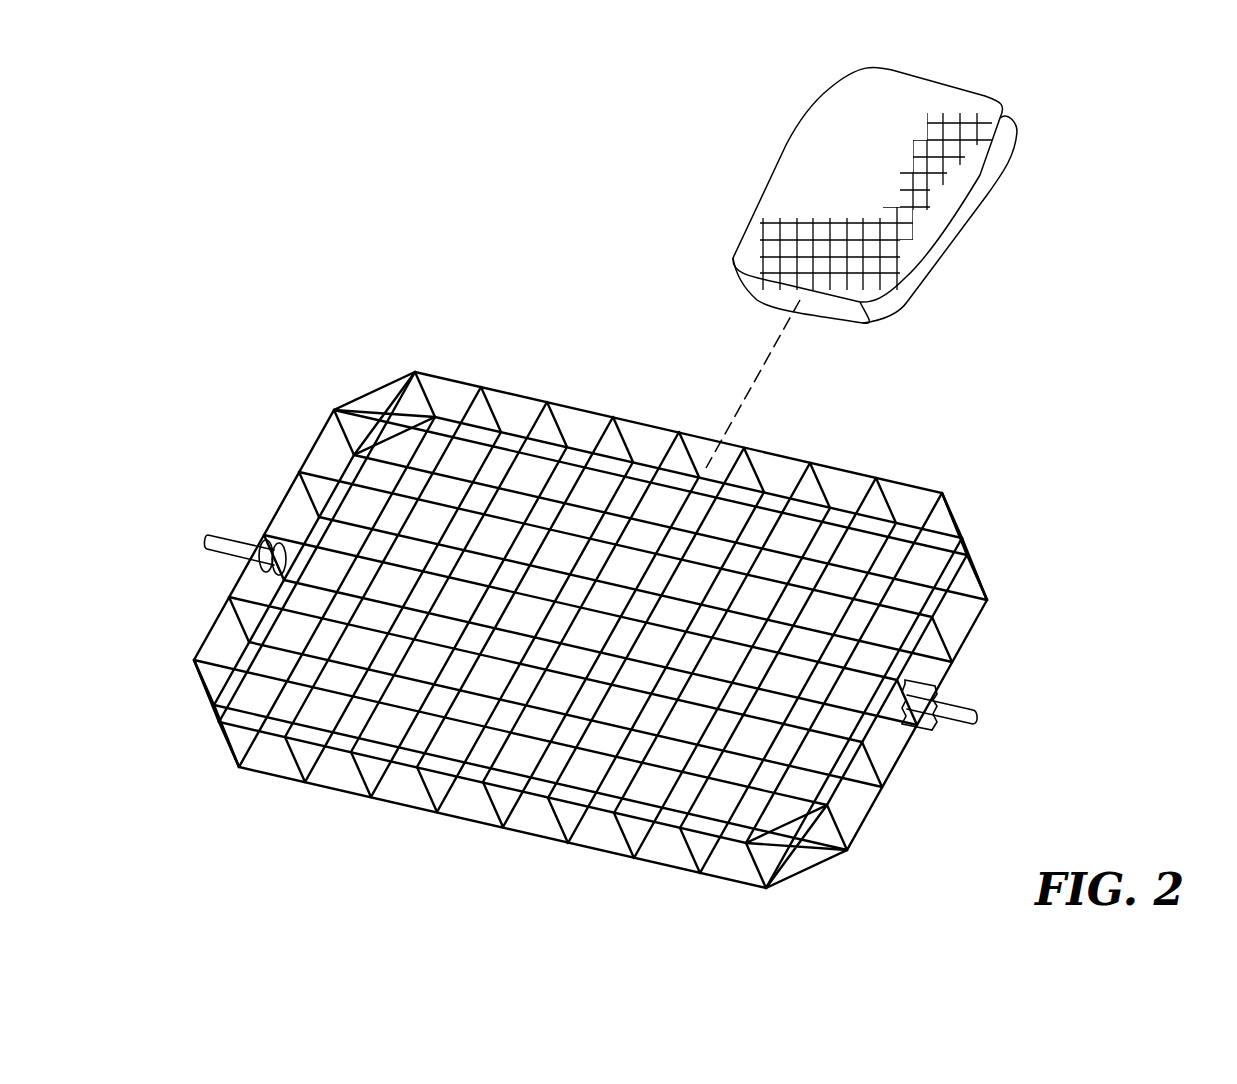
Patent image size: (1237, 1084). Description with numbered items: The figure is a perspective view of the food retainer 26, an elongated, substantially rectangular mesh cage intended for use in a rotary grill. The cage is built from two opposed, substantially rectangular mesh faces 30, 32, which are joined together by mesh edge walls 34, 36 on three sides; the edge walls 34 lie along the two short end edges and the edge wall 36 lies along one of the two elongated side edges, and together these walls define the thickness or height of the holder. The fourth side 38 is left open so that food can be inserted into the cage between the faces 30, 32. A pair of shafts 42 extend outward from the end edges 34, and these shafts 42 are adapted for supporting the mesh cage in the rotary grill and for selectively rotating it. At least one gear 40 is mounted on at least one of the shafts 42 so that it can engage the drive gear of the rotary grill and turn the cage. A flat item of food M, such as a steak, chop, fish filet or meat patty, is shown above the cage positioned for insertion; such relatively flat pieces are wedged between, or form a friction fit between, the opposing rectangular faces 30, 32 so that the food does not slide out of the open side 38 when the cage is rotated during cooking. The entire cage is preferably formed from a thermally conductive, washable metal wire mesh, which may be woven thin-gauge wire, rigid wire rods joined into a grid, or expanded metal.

The food retainer 26 is at (650, 575).
The mesh face 30 is at (874, 482).
The mesh face 32 is at (331, 772).
The mesh edge wall 34 is at (330, 453).
The mesh edge wall 36 is at (264, 770).
The fourth side 38 is at (513, 382).
The gear 40 is at (924, 732).
The shaft 42 is at (212, 540).
The meat / food item M is at (743, 120).